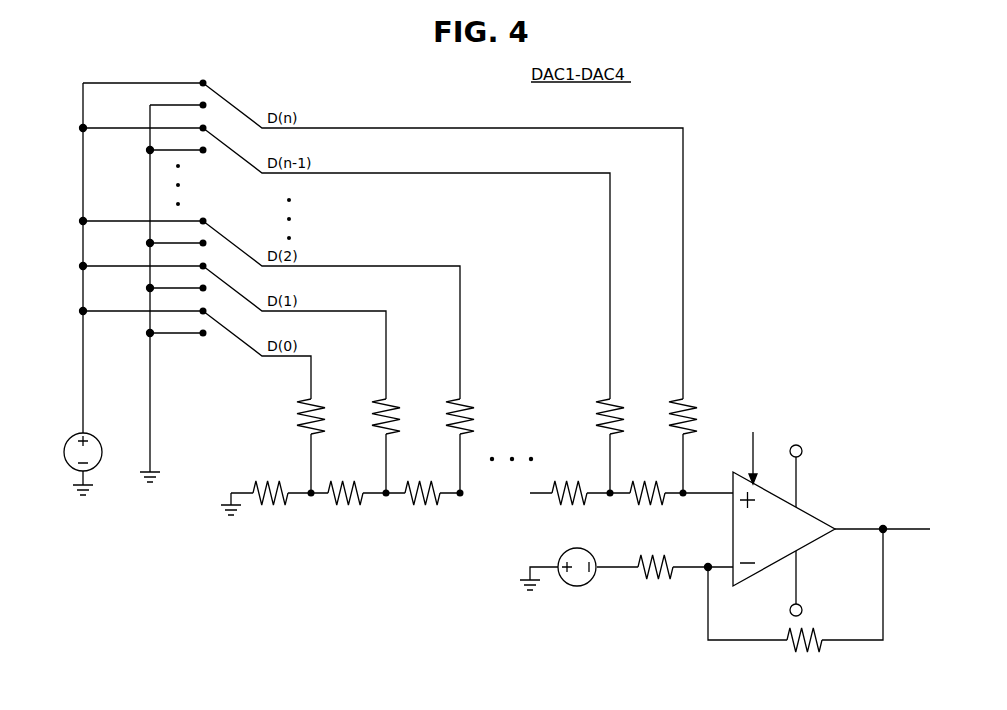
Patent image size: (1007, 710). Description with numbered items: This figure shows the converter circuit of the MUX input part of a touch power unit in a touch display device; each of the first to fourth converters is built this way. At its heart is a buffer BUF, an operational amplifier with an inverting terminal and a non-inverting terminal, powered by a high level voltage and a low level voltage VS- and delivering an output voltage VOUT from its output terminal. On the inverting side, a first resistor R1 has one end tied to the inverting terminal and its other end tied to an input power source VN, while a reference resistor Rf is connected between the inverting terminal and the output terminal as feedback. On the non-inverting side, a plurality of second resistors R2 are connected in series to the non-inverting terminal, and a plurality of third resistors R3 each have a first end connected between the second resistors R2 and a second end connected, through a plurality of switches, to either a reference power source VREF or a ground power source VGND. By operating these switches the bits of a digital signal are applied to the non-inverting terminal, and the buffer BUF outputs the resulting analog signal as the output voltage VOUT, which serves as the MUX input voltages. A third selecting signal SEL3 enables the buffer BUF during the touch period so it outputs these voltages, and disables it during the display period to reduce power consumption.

The reference power source VREF is at (110, 289).
The ground power source VGND is at (165, 302).
The third resistor R3 is at (475, 464).
The second resistor R2 is at (496, 505).
The first resistor R1 is at (665, 558).
The reference resistor Rf is at (795, 600).
The buffer BUF is at (784, 529).
The third selecting signal SEL3 is at (752, 449).
The low level voltage VS- is at (810, 585).
The output voltage VOUT is at (882, 521).
The input power source VN is at (558, 576).